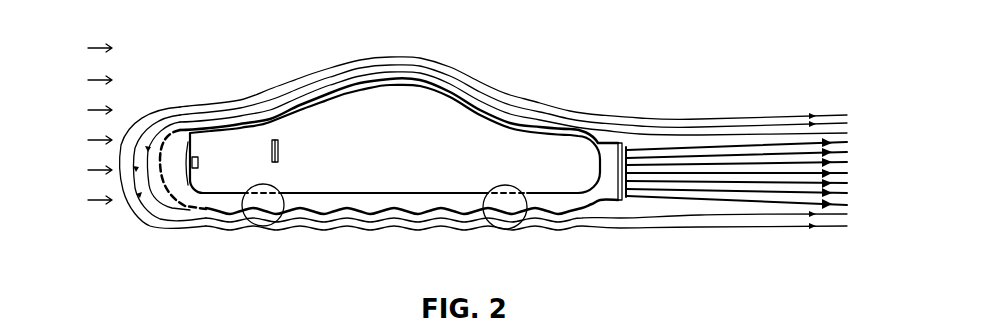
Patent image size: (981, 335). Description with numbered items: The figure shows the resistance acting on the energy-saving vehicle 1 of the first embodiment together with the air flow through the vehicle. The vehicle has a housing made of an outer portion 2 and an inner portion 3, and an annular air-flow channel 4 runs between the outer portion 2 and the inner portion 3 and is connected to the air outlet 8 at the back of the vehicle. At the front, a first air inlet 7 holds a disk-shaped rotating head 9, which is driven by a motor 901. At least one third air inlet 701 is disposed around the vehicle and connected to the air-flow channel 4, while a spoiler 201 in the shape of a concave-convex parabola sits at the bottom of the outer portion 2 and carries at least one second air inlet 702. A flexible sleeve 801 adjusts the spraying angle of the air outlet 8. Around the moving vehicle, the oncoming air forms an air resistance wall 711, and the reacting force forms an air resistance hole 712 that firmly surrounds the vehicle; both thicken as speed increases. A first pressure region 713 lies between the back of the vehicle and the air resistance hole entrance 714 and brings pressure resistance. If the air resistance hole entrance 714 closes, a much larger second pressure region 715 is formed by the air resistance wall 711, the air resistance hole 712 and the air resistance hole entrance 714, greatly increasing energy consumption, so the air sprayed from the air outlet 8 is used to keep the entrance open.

The main body 1 is at (220, 129).
The outer portion 2 is at (380, 193).
The inner portion 3 is at (423, 199).
The air-flow channel 4 is at (470, 110).
The first air inlet 7 is at (148, 148).
The air outlet 8 is at (630, 157).
The rotating head 9 is at (156, 157).
The spoiler 201 is at (528, 209).
The third air inlet 701 is at (278, 162).
The second air inlet 702 is at (290, 211).
The air resistance wall 711 is at (112, 140).
The air resistance hole 712 is at (318, 88).
The first pressure region 713 is at (663, 170).
The air resistance hole entrance 714 is at (828, 176).
The second pressure region 715 is at (353, 83).
The flexible sleeve 801 is at (620, 178).
The motor 901 is at (198, 166).